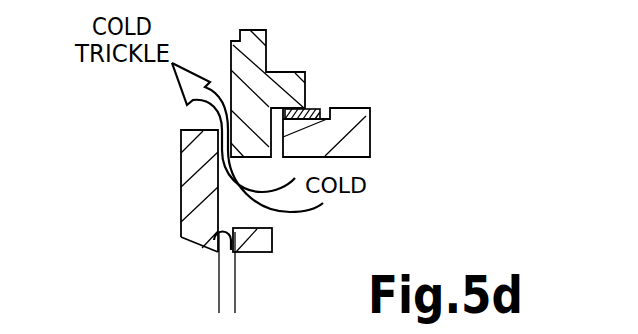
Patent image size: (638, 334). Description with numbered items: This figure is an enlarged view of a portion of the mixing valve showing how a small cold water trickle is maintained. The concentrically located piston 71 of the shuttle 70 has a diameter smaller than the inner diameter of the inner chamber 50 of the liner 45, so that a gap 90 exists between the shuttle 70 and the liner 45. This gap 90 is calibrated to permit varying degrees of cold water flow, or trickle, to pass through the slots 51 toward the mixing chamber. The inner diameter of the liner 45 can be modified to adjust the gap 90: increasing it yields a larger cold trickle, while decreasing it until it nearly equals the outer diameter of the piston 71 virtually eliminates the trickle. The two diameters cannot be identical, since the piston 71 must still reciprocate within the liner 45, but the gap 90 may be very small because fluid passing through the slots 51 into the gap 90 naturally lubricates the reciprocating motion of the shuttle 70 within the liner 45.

The liner 45 is at (260, 57).
The shuttle 70 is at (181, 160).
The piston 71 is at (190, 198).
The inner chamber 50 is at (207, 247).
The slots 51 is at (272, 230).
The gap 90 is at (195, 287).